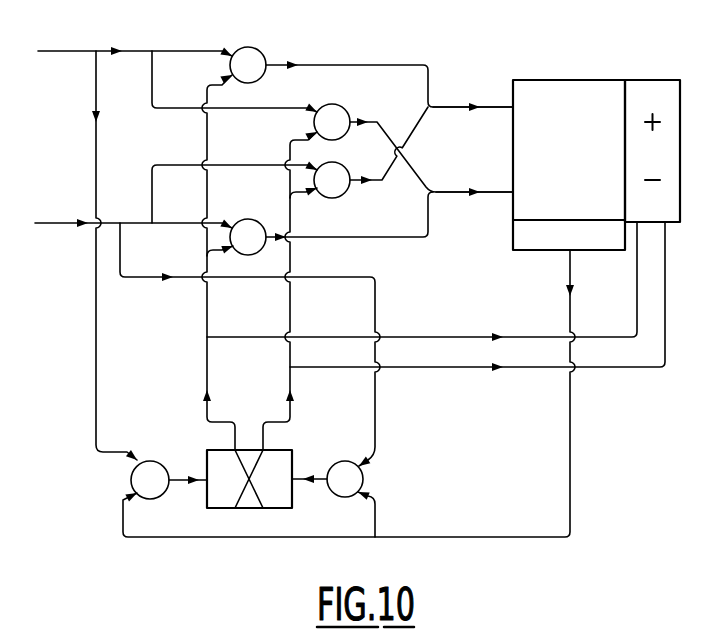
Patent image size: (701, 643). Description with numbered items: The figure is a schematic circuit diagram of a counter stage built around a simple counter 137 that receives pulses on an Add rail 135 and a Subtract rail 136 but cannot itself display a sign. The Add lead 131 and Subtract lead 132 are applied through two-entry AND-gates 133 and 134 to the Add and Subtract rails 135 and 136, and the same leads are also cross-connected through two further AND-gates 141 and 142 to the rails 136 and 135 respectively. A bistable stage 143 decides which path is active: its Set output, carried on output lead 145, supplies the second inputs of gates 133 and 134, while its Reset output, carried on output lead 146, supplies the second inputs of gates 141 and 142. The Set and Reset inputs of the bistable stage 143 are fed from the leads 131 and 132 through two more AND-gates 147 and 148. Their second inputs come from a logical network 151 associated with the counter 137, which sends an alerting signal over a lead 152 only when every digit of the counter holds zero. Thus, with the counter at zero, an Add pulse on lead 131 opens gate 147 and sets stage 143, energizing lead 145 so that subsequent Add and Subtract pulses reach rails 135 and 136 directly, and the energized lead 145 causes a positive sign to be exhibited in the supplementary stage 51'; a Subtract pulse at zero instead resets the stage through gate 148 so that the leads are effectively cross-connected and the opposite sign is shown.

The Add lead 131 is at (66, 56).
The Subtract lead 132 is at (60, 228).
The two-entry AND-gate 133 is at (250, 47).
The two-entry AND-gate 134 is at (250, 219).
The two-entry AND-gate 141 is at (339, 104).
The two-entry AND-gate 142 is at (341, 197).
The counter 137 is at (572, 79).
The Add rail 135 is at (489, 107).
The Subtract rail 136 is at (491, 192).
The supplementary stage 51' is at (652, 123).
The logical network 151 is at (523, 252).
The lead 152 is at (572, 313).
The output lead 145 is at (255, 335).
The output lead 146 is at (357, 369).
The bistable stage 143 is at (250, 449).
The two-entry AND-gate 147 is at (154, 460).
The two-entry AND-gate 148 is at (340, 462).